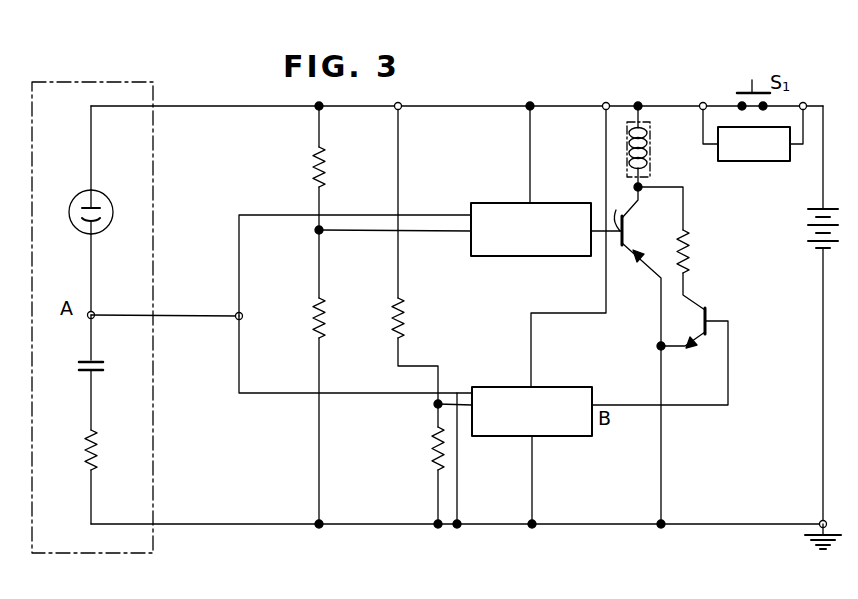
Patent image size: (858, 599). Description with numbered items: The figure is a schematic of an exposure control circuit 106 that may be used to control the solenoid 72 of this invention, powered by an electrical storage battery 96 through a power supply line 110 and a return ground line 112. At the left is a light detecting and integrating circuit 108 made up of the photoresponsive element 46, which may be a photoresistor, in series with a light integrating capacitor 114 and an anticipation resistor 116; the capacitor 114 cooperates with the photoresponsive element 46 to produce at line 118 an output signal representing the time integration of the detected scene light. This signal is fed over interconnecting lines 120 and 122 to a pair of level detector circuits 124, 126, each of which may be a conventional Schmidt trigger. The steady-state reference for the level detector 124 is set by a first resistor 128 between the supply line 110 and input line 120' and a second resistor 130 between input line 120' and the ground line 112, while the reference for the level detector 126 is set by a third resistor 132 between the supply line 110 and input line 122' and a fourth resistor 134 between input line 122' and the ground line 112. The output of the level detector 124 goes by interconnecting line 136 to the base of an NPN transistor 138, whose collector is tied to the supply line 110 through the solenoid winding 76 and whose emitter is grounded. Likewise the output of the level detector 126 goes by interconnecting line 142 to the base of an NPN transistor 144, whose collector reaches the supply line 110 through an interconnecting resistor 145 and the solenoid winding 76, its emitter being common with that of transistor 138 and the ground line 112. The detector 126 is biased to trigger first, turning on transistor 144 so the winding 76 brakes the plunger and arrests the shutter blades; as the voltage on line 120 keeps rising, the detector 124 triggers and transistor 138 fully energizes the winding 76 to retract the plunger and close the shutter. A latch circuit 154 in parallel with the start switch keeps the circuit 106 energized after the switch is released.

The photoresponsive element 46 is at (111, 211).
The solenoid 72 is at (651, 151).
The solenoid winding 76 is at (645, 139).
The electrical storage battery 96 is at (816, 229).
The exposure control circuit 106 is at (559, 88).
The light detecting and integrating circuit 108 is at (137, 82).
The power supply line 110 is at (462, 106).
The return ground line 112 is at (282, 524).
The light integrating capacitor 114 is at (88, 372).
The anticipation resistor 116 is at (96, 449).
The output line 118 is at (204, 318).
The interconnecting line 120 is at (349, 243).
The input line 120' is at (393, 251).
The interconnecting line 122 is at (355, 369).
The input line 122' is at (480, 435).
The level detector circuit 124 is at (563, 203).
The level detector circuit 126 is at (566, 436).
The first resistor 128 is at (325, 155).
The second resistor 130 is at (312, 316).
The third resistor 132 is at (403, 316).
The fourth resistor 134 is at (445, 455).
The interconnecting line 136 is at (620, 244).
The NPN transistor 138 is at (627, 232).
The interconnecting line 142 is at (708, 405).
The NPN transistor 144 is at (709, 313).
The interconnecting resistor 145 is at (690, 241).
The latch circuit 154 is at (765, 161).